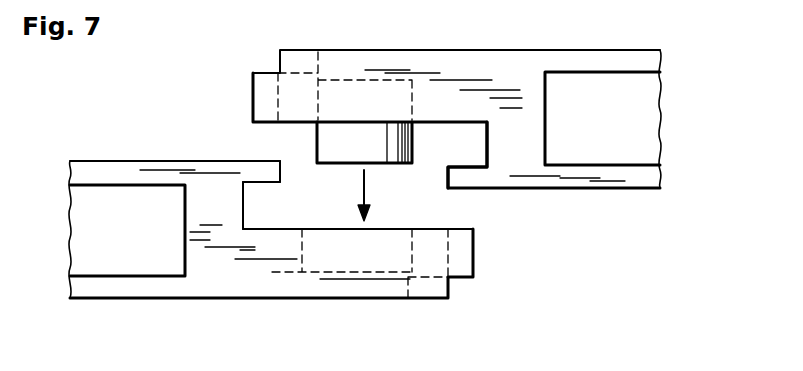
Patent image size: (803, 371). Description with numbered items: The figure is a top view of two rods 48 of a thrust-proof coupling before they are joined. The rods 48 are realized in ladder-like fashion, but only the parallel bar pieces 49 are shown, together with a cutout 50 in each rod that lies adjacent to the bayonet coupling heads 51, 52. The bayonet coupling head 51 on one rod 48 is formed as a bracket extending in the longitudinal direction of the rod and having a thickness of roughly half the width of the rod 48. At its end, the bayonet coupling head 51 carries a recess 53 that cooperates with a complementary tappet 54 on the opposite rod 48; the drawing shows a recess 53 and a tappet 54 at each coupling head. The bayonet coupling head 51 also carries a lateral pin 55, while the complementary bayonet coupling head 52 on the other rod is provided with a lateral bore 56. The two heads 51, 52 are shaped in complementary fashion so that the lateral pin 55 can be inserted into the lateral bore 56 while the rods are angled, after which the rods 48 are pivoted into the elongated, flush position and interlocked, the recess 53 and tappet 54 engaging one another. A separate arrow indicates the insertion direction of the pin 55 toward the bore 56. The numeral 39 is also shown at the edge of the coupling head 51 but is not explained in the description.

The clip 39 is at (252, 96).
The rod 48 is at (524, 255).
The plate 49 is at (607, 63).
The cutout 50 is at (628, 113).
The bayonet coupling head 51 is at (387, 63).
The bayonet coupling head 52 is at (382, 286).
The recess 53 is at (270, 70).
The tappet 54 is at (255, 172).
The lateral pin 55 is at (396, 164).
The lateral bore 56 is at (347, 208).